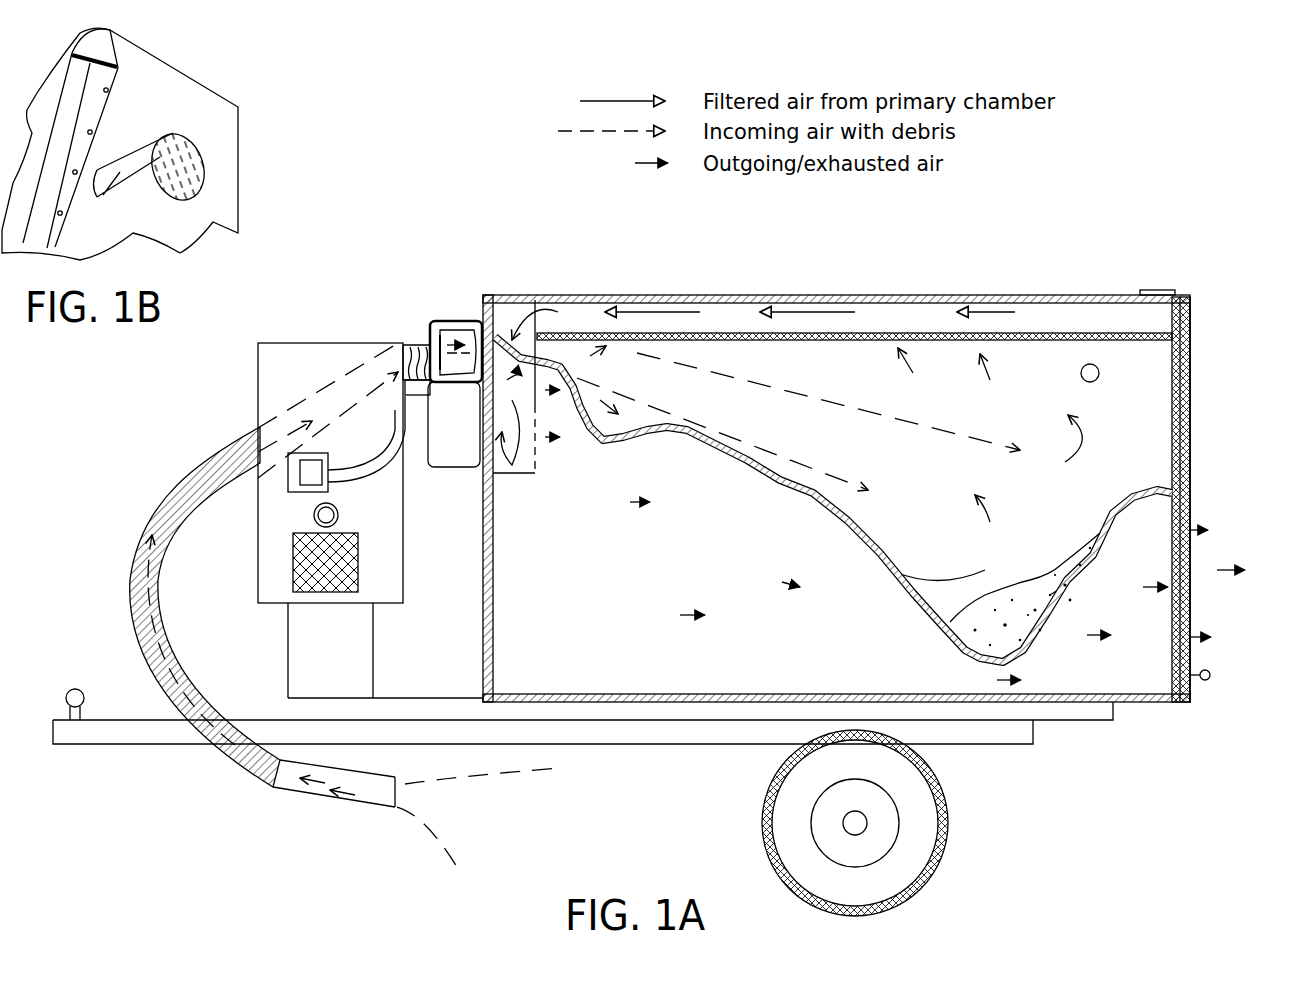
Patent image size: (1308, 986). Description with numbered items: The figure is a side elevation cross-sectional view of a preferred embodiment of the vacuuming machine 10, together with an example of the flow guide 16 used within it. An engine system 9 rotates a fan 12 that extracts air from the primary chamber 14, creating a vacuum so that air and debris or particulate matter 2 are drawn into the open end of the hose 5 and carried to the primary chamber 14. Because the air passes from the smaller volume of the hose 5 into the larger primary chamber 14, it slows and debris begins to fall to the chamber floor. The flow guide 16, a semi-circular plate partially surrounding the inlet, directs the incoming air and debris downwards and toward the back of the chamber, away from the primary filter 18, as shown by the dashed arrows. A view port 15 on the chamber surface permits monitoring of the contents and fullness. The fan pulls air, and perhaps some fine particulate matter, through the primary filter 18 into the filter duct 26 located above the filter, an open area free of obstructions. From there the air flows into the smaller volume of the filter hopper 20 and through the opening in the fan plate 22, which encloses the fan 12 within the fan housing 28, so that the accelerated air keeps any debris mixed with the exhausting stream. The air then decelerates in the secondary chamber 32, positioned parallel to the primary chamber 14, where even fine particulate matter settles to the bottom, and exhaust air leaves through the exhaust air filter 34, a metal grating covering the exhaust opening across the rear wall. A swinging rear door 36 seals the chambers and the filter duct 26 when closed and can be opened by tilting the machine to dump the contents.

In FIG. 1A, the debris or particulate matter 2 is at (1043, 573).
In FIG. 1A, the hose 5 is at (140, 547).
In FIG. 1A, the engine system 9 is at (277, 392).
In FIG. 1A, the vacuuming machine 10 is at (470, 258).
In FIG. 1A, the fan 12 is at (443, 330).
In FIG. 1A, the primary chamber 14 is at (1033, 368).
In FIG. 1A, the view port 15 is at (1100, 374).
In FIG. 1B, the flow guide 16 is at (157, 140).
In FIG. 1A, the primary filter 18 is at (880, 333).
In FIG. 1A, the filter hopper 20 is at (533, 480).
In FIG. 1A, the fan plate 22 is at (493, 480).
In FIG. 1A, the filter duct 26 is at (713, 318).
In FIG. 1A, the fan housing 28 is at (447, 453).
In FIG. 1A, the secondary chamber 32 is at (752, 640).
In FIG. 1A, the exhaust air filter 34 is at (1190, 470).
In FIG. 1A, the rear door 36 is at (1190, 377).